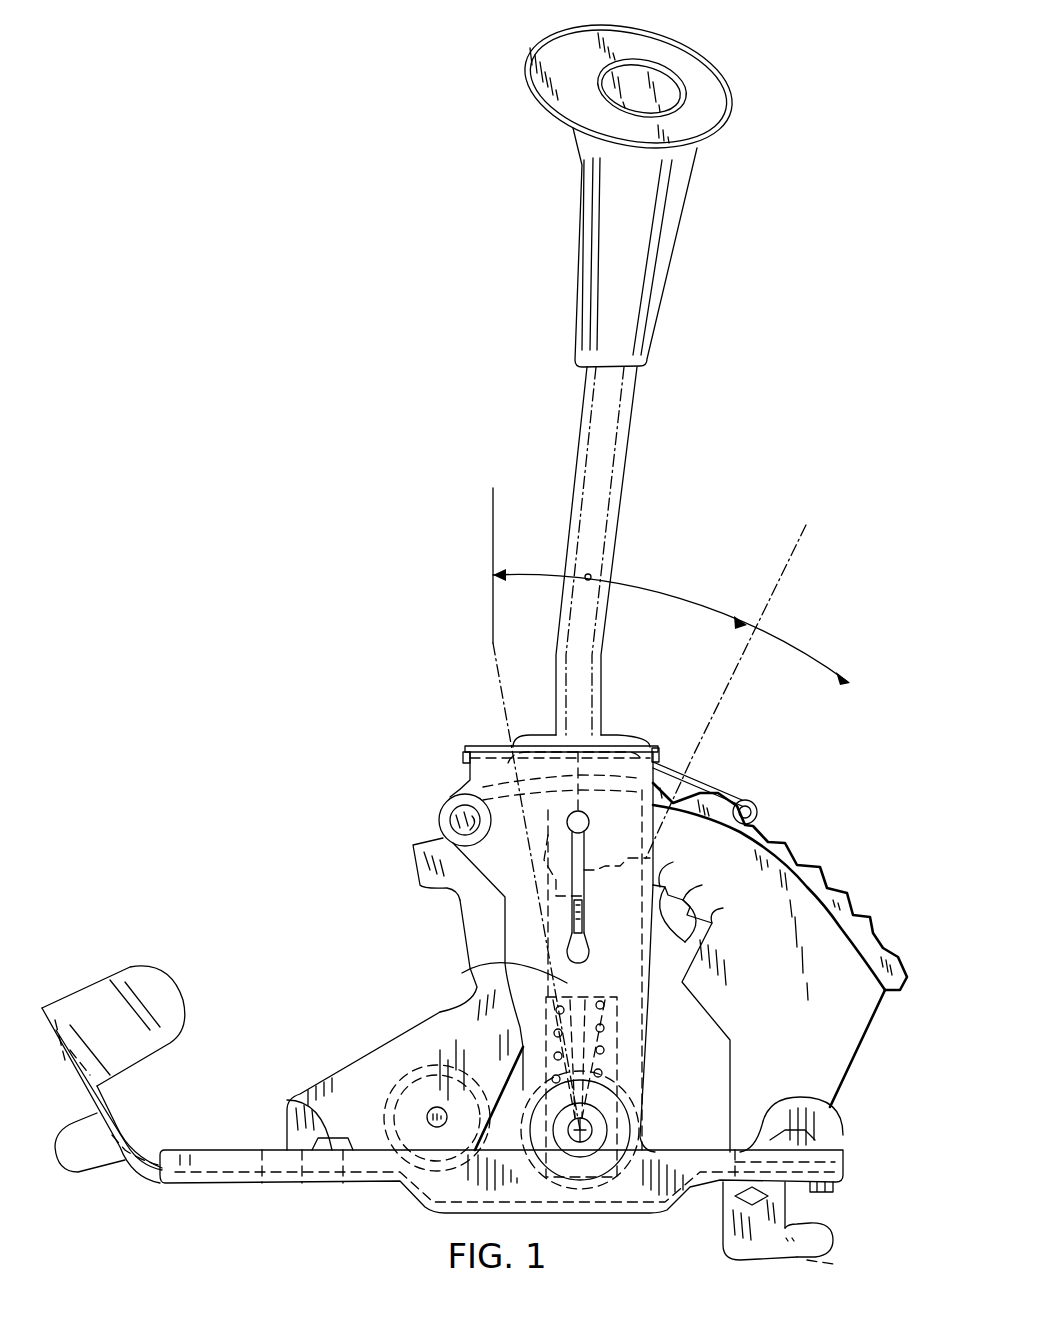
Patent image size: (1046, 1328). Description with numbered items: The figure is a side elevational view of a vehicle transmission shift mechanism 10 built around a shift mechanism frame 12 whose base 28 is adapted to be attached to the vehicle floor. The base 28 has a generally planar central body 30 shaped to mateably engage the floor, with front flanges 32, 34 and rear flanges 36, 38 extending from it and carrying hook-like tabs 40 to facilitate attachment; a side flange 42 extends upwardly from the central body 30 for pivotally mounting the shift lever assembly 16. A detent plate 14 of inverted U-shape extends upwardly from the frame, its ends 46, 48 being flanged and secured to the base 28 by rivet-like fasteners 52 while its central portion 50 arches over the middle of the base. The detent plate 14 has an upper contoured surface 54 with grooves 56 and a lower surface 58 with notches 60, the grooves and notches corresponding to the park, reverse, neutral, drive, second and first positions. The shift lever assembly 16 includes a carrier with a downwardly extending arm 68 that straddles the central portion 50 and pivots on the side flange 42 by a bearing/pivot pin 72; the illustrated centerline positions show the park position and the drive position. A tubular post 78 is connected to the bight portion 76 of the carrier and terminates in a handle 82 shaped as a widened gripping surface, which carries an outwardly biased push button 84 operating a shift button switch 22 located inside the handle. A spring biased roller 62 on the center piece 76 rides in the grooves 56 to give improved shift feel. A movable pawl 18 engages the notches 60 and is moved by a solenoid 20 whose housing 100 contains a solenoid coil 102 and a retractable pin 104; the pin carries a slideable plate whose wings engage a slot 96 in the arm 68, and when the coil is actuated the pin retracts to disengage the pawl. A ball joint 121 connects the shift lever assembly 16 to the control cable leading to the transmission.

The shift mechanism 10 is at (434, 328).
The shift mechanism frame 12 is at (113, 1052).
The detent plate 14 is at (520, 951).
The shift lever assembly 16 is at (622, 551).
The pawl 18 is at (600, 888).
The solenoid 20 is at (597, 952).
The shift button switch 22 is at (645, 186).
The base 28 is at (501, 1156).
The central body 30 is at (340, 1186).
The front flange 32 is at (99, 1038).
The front flange 34 is at (59, 1159).
The rear flange 36 is at (775, 1228).
The rear flange 38 is at (835, 1260).
The hook-like tab 40 is at (800, 1224).
The side flange 42 is at (601, 1127).
The end of detent plate 46 is at (345, 1080).
The end of detent plate 48 is at (828, 1082).
The central portion 50 is at (780, 946).
The rivet-like fasteners 52 is at (287, 1107).
The upper contoured surface 54 is at (827, 888).
The grooves 56 is at (847, 895).
The lower surface 58 is at (595, 880).
The notches 60 is at (512, 858).
The spring biased roller 62 is at (700, 775).
The arm 68 is at (505, 897).
The pivot pin 72 is at (590, 1125).
The bight portion 76 is at (658, 752).
The tubular post 78 is at (617, 536).
The handle 82 is at (668, 45).
The push button 84 is at (670, 80).
The slot 96 is at (585, 832).
The solenoid housing 100 is at (610, 1025).
The solenoid coil 102 is at (600, 1040).
The solenoid retractable pin 104 is at (491, 1011).
The ball joint 121 is at (460, 810).